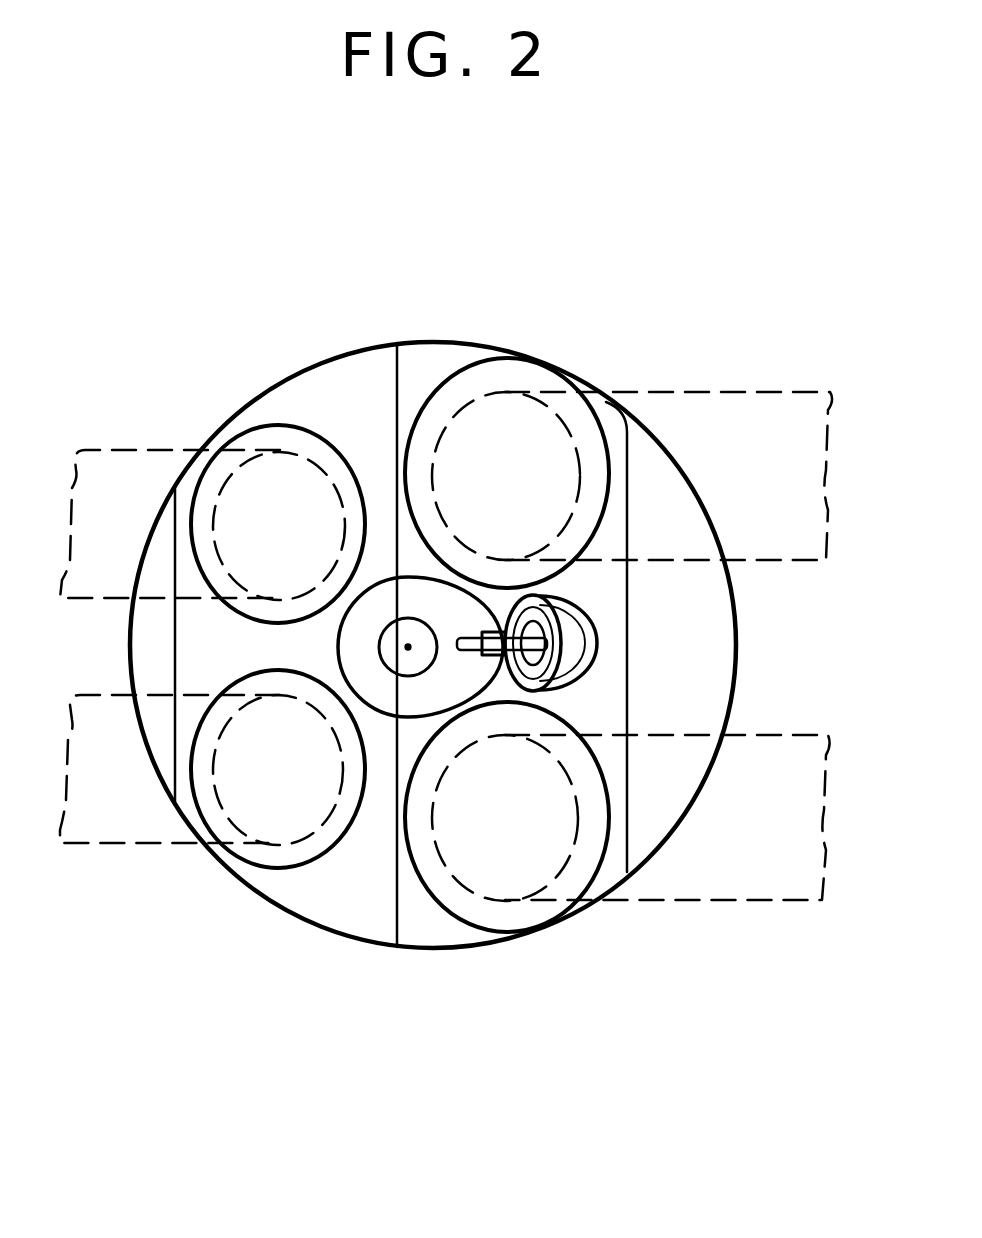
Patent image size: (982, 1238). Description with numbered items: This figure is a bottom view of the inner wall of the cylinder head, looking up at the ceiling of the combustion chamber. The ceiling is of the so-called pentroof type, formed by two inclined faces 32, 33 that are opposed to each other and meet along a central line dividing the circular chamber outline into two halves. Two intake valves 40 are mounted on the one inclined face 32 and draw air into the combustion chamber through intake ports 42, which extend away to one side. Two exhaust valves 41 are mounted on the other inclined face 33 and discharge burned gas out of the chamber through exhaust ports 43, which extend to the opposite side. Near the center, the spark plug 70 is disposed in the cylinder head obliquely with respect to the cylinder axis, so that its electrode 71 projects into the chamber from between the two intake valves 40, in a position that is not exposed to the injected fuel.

The inclined face 32 is at (427, 932).
The inclined face 33 is at (328, 910).
The intake valve 40 is at (507, 378).
The exhaust valve 41 is at (265, 440).
The intake port 42 is at (805, 392).
The exhaust port 43 is at (150, 448).
The spark plug 70 is at (557, 622).
The electrode 71 is at (537, 703).